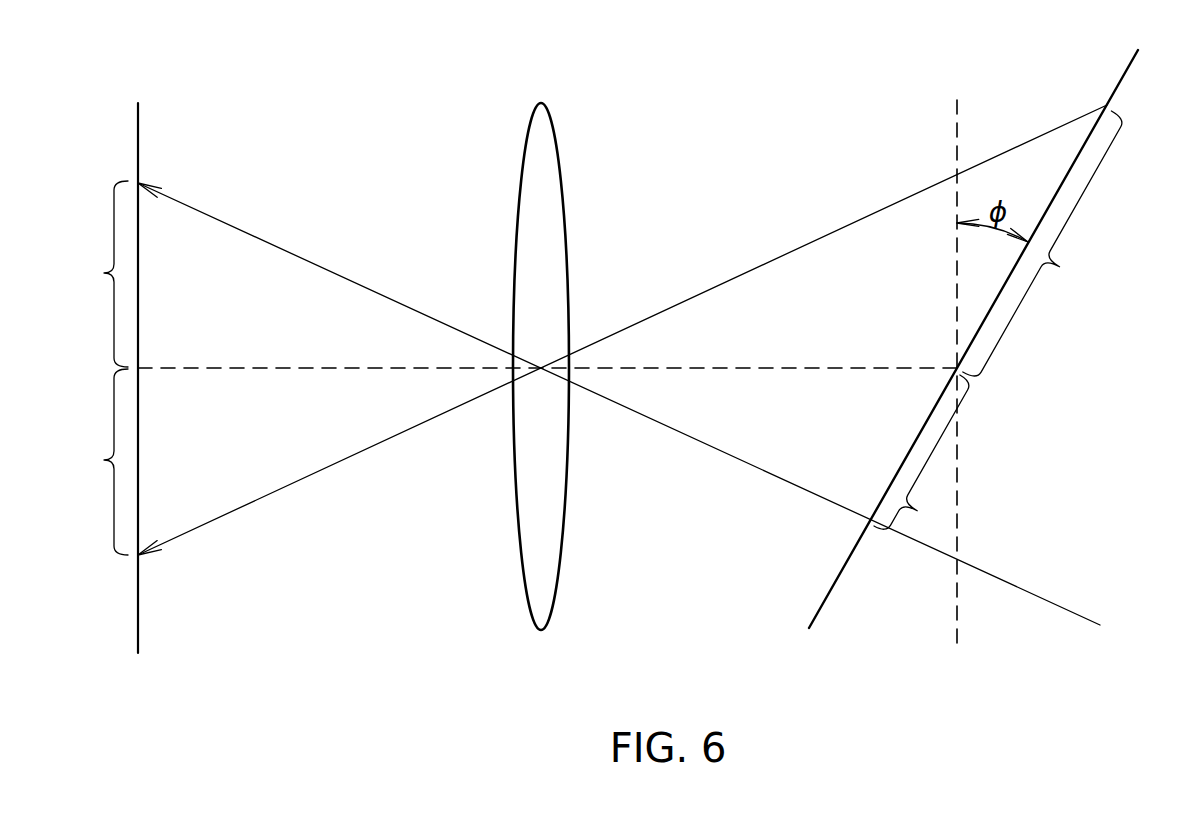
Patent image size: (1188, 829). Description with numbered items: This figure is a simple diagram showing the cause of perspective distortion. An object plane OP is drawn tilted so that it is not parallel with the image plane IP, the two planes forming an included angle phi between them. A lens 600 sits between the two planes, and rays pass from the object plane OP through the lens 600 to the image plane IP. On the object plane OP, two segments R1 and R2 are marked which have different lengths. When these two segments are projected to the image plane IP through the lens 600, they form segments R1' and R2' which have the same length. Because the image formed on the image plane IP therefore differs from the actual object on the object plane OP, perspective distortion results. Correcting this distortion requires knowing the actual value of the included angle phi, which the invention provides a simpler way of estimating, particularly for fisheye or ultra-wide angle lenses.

The lens 600 is at (541, 104).
The image plane IP is at (137, 363).
The object plane OP is at (982, 323).
The first segment R1 is at (1042, 243).
The second segment R2 is at (921, 455).
The first projected segment R1' is at (94, 274).
The second projected segment R2' is at (94, 462).